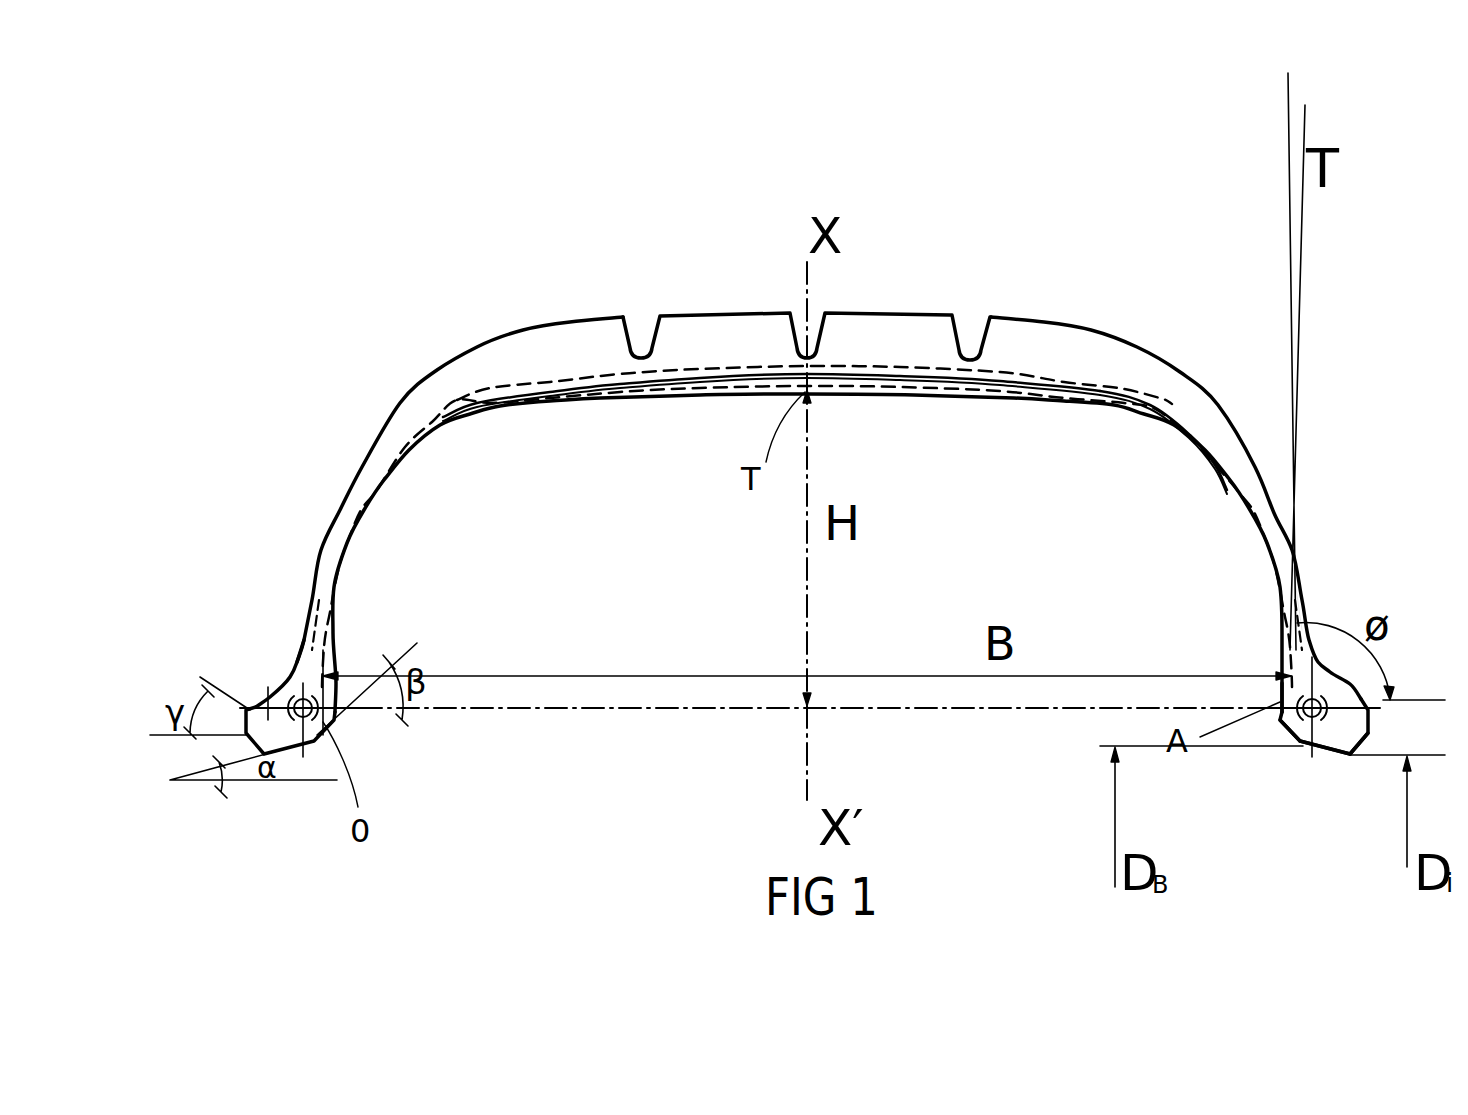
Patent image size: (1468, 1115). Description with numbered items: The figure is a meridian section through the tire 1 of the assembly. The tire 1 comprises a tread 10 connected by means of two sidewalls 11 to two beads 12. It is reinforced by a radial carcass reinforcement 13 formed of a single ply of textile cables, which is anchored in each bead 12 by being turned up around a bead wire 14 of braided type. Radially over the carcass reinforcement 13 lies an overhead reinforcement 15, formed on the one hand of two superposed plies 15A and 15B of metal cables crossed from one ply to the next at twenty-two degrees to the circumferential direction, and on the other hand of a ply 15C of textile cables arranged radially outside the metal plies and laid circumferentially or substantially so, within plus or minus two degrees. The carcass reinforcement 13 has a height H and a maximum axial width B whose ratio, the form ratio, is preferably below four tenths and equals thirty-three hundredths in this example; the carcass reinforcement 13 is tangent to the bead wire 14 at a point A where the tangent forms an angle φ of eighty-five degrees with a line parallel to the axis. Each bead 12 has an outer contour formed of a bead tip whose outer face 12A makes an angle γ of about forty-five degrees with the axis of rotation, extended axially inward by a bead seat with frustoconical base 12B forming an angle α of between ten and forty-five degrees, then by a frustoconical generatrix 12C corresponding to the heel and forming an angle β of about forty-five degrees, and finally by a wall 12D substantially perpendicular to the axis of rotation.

The tire 1 is at (893, 330).
The tread 10 is at (1063, 348).
The sidewall 11 is at (372, 477).
The bead 12 is at (268, 687).
The outer face of the bead tip 12A is at (1358, 747).
The bead seat with frustoconical base 12B is at (1330, 753).
The frustoconical generatrix 12C is at (1297, 726).
The wall 12D is at (1280, 702).
The radial carcass reinforcement 13 is at (1227, 490).
The bead wire 14 is at (1297, 623).
The overhead reinforcement 15 is at (665, 383).
The ply of metal cables 15A is at (453, 400).
The ply of metal cables 15B is at (503, 388).
The ply of textile cables 15C is at (607, 377).